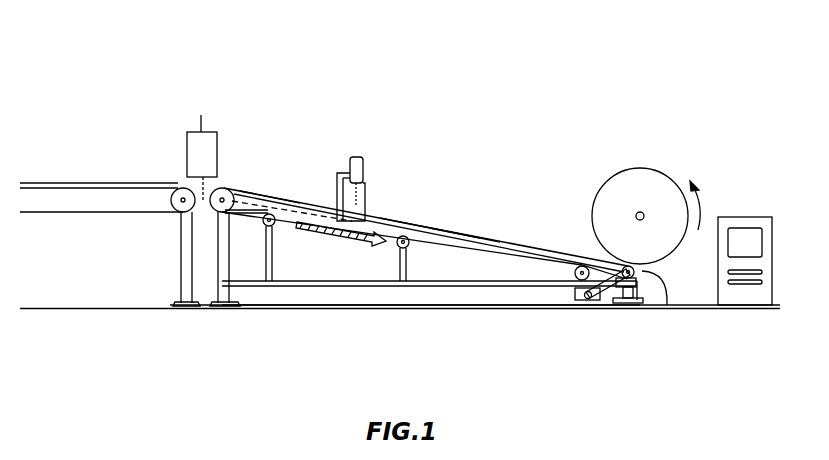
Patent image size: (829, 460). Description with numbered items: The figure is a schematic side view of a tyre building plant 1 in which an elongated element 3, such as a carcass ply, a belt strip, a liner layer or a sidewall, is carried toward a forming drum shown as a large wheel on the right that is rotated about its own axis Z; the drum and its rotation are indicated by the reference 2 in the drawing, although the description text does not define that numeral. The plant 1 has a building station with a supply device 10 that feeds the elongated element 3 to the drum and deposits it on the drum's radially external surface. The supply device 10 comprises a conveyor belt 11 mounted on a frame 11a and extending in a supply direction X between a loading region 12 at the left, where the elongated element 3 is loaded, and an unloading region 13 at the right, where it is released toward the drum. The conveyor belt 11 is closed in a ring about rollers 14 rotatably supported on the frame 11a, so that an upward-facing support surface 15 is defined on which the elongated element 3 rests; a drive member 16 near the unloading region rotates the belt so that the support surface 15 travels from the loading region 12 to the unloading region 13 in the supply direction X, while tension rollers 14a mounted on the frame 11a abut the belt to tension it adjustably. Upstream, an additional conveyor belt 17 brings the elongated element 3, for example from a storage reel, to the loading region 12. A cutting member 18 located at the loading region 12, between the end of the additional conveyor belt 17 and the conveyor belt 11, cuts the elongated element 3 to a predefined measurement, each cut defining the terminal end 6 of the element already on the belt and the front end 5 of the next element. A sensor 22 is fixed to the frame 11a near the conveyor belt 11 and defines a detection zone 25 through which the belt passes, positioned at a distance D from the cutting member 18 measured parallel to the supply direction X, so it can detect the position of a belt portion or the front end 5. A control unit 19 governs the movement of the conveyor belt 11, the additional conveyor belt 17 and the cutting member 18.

The tyre building plant 1 is at (548, 92).
The reel 2 is at (650, 169).
The elongated element 3 is at (303, 190).
The front end 5 is at (399, 216).
The terminal end 6 is at (256, 186).
The supply device 10 is at (183, 100).
The conveyor belt 11 is at (518, 239).
The frame 11a is at (442, 291).
The loading region 12 is at (222, 185).
The unloading region 13 is at (599, 256).
The rollers 14 is at (212, 306).
The tension rollers 14a is at (246, 290).
The support surface 15 is at (452, 228).
The drive member 16 is at (583, 305).
The additional conveyor belt 17 is at (87, 184).
The cutting member 18 is at (216, 131).
The control unit 19 is at (750, 216).
The sensor 22 is at (357, 153).
The detection zone 25 is at (364, 205).
The axis Z is at (644, 213).
The distance D is at (312, 226).
The supply direction X is at (352, 247).